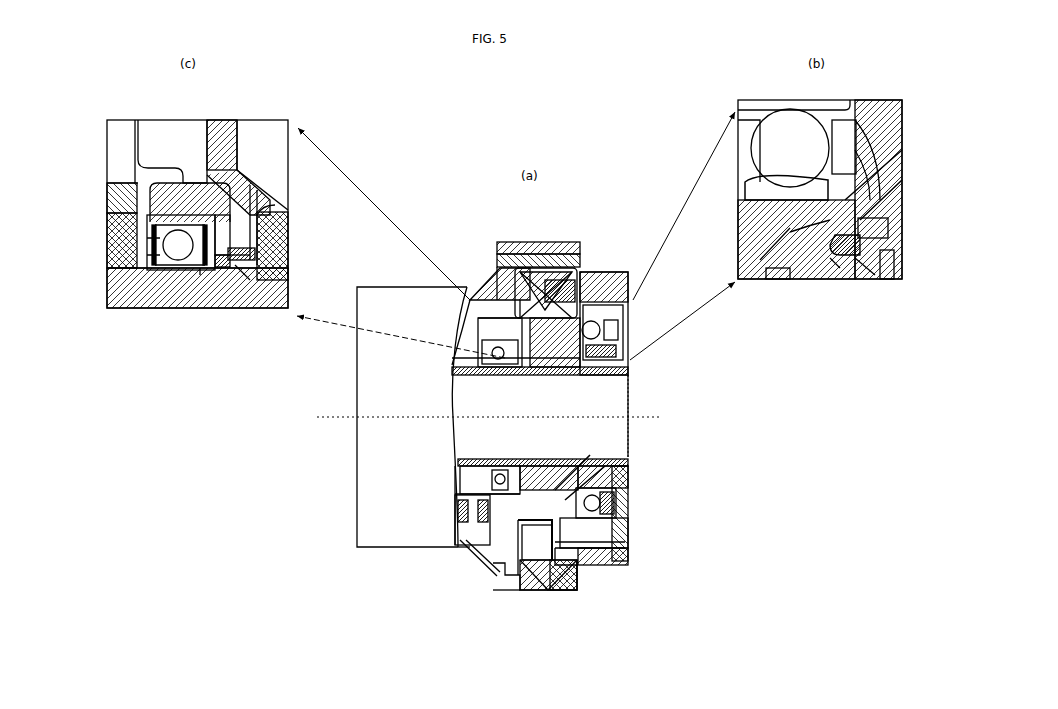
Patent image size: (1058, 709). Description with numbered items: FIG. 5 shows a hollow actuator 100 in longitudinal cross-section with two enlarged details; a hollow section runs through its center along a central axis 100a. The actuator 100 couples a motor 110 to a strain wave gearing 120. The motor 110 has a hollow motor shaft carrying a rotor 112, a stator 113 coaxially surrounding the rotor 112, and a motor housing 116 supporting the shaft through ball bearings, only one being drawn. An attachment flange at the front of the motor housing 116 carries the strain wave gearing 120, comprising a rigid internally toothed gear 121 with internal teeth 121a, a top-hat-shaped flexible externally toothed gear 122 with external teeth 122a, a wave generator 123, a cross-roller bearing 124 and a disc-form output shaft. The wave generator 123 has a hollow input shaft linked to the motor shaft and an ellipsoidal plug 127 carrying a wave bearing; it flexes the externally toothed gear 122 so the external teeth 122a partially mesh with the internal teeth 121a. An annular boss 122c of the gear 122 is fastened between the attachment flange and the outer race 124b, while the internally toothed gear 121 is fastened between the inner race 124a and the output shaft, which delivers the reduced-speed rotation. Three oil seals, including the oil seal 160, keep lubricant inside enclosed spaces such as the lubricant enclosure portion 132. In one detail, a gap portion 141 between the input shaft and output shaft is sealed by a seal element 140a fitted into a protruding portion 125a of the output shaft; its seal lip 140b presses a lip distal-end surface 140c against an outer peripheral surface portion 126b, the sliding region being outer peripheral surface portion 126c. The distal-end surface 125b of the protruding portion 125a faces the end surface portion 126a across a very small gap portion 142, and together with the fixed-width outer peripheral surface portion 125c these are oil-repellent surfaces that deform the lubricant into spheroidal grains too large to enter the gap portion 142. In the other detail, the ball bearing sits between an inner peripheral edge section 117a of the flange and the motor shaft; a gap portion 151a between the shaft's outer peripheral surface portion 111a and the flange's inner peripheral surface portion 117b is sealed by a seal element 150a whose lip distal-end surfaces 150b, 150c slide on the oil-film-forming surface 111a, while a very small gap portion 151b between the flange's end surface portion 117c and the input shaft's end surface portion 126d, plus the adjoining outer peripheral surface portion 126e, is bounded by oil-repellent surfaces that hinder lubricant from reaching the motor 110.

The actuator 100 is at (476, 580).
The central axis 100a is at (636, 414).
The motor 110 is at (440, 552).
The outer peripheral surface portion 111a is at (258, 282).
The rotor 112 is at (452, 488).
The stator 113 is at (452, 522).
The motor housing 116 is at (385, 555).
The inner peripheral edge section 117a is at (268, 160).
The inner peripheral surface portion 117b is at (195, 172).
The end surface portion 117c is at (258, 194).
The strain wave gearing 120 is at (590, 568).
The rigid internally toothed gear 121 is at (600, 535).
The internal teeth 121a is at (620, 505).
The top-hat-shaped flexible externally toothed gear 122 is at (612, 507).
The external teeth 122a is at (590, 568).
The annular boss 122c is at (518, 583).
The wave generator 123 is at (615, 498).
The cross-roller bearing 124 is at (550, 594).
The inner race 124a is at (549, 468).
The outer race 124b is at (565, 594).
The protruding portion 125a is at (855, 178).
The distal-end surface 125b is at (868, 142).
The outer peripheral surface portion 125c is at (860, 162).
The end surface portion 126a is at (790, 246).
The outer peripheral surface portion 126b is at (830, 248).
The outer peripheral surface portion 126c is at (846, 255).
The end surface portion 126d is at (258, 250).
The outer peripheral surface portion 126e is at (268, 208).
The plug 127 is at (748, 192).
The lubricant enclosure portion 132 is at (552, 295).
The seal element 140a is at (885, 240).
The seal lip 140b is at (895, 262).
The lip distal-end surface 140c is at (858, 258).
The gap portion 141 is at (782, 270).
The very small gap portion 142 is at (795, 232).
The seal element 150a is at (174, 272).
The lip distal-end surface 150b is at (238, 278).
The lip distal-end surface 150c is at (210, 275).
The gap portion 151a is at (228, 268).
The very small gap portion 151b is at (246, 268).
The oil seal 160 is at (583, 270).